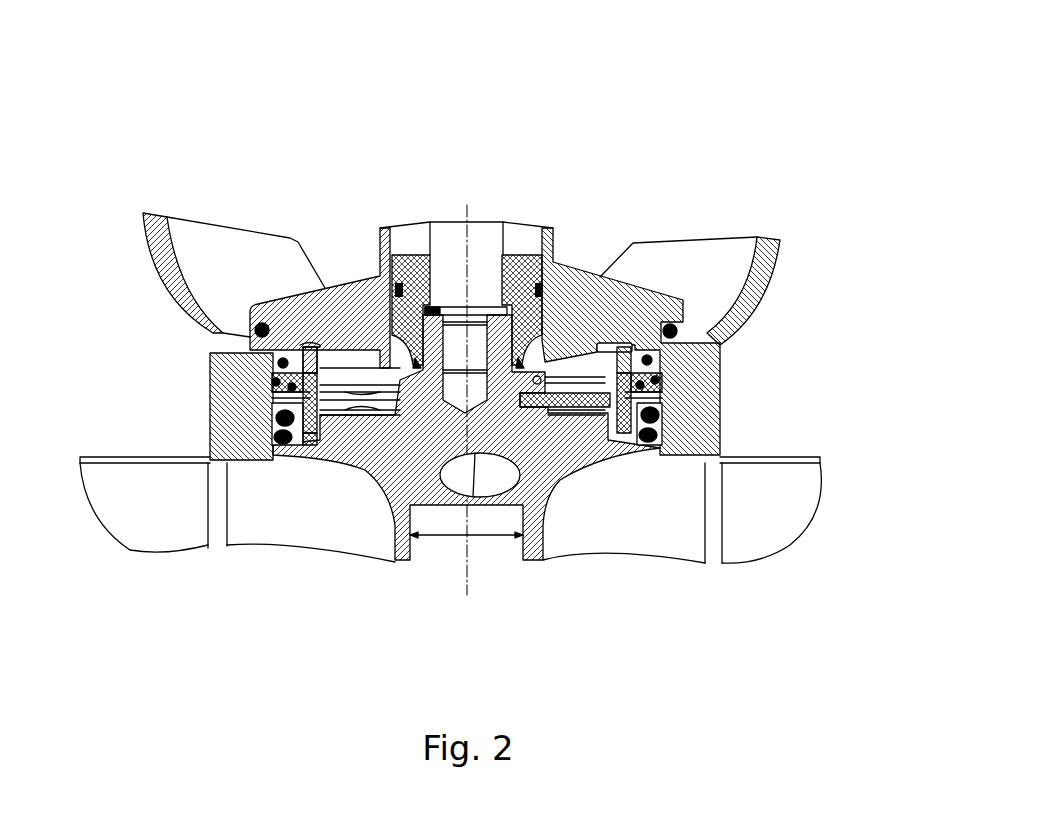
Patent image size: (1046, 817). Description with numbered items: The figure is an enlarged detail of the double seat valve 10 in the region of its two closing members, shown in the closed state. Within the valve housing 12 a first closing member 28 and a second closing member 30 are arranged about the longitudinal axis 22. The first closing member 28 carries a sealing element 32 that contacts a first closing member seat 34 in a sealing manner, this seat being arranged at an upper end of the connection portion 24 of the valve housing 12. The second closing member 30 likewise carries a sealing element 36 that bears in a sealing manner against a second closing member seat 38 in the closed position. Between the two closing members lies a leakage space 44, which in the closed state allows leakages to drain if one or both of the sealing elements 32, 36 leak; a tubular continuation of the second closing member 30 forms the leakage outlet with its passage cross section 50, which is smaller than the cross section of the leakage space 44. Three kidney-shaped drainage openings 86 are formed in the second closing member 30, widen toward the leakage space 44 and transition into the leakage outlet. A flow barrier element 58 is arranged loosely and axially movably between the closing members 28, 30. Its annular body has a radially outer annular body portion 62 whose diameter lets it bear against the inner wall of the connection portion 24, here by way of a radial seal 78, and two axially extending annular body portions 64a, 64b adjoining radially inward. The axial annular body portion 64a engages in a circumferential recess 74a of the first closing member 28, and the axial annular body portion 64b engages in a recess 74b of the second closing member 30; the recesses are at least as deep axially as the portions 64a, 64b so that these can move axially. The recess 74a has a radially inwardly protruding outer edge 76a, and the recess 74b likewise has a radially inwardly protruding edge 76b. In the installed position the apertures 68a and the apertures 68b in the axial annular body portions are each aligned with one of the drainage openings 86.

The double seat valve 10 is at (640, 113).
The valve housing 12 is at (792, 252).
The longitudinal axis 22 is at (467, 210).
The connection portion 24 is at (700, 415).
The first closing member 28 is at (344, 365).
The second closing member 30 is at (360, 465).
The sealing element 32 is at (267, 327).
The first closing member seat 34 is at (672, 334).
The sealing element 36 is at (650, 430).
The second closing member seat 38 is at (272, 428).
The leakage space 44 is at (342, 428).
The passage cross section 50 is at (437, 537).
The flow barrier element 58 is at (603, 407).
The radially outer annular body portion 62 is at (632, 367).
The axial annular body portion 64a is at (612, 350).
The axial annular body portion 64b is at (620, 440).
The apertures 68a is at (322, 376).
The apertures 68b is at (313, 440).
The recess 74a is at (320, 347).
The recess 74b is at (303, 417).
The radially outer edge 76a is at (300, 368).
The radially inwardly protruding edge 76b is at (305, 405).
The radial seal 78 is at (655, 383).
The drainage openings 86 is at (410, 463).